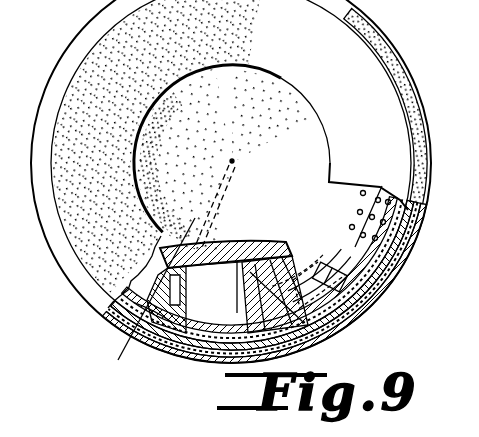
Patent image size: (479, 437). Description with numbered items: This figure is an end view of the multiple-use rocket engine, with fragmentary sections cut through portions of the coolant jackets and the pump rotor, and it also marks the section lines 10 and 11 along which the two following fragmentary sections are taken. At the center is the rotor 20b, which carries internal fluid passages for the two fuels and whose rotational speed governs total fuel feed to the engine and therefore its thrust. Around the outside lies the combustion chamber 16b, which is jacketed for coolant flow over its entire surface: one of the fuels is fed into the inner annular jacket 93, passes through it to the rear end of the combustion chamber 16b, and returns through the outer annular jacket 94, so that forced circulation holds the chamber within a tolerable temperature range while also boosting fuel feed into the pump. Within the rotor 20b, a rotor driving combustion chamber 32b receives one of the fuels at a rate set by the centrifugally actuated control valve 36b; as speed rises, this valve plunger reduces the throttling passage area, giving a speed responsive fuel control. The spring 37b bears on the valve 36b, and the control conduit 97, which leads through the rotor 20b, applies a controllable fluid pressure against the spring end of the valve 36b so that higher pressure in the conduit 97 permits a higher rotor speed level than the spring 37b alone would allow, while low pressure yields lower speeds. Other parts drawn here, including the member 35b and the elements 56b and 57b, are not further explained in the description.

The section line 10- 10 is at (382, 186).
The section line 11- 11 is at (194, 218).
The combustion chamber 16b is at (355, 310).
The rotor 20b is at (374, 289).
The rotor driving combustion chamber 32b is at (227, 287).
The adjusting pad 35b is at (336, 260).
The centrifugally actuated control valve 36b is at (112, 307).
The spring 37b is at (144, 314).
The friction lining 56b is at (326, 341).
The friction lining 57b is at (287, 355).
The inner annular jacket 93 is at (400, 252).
The outer annular jacket 94 is at (398, 281).
The control conduit 97 is at (203, 225).